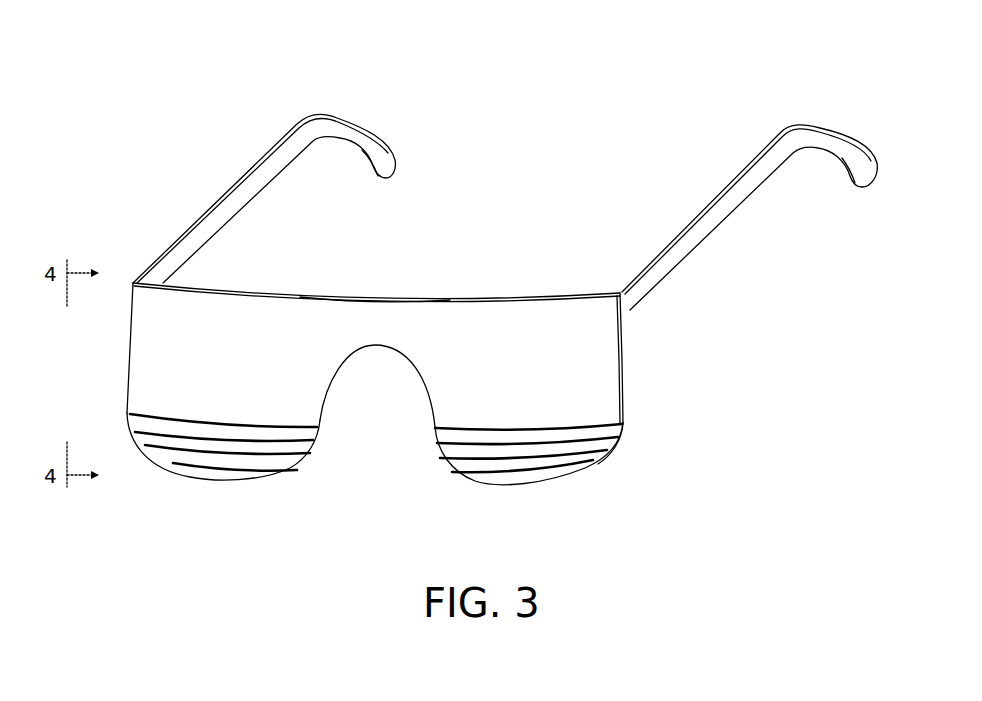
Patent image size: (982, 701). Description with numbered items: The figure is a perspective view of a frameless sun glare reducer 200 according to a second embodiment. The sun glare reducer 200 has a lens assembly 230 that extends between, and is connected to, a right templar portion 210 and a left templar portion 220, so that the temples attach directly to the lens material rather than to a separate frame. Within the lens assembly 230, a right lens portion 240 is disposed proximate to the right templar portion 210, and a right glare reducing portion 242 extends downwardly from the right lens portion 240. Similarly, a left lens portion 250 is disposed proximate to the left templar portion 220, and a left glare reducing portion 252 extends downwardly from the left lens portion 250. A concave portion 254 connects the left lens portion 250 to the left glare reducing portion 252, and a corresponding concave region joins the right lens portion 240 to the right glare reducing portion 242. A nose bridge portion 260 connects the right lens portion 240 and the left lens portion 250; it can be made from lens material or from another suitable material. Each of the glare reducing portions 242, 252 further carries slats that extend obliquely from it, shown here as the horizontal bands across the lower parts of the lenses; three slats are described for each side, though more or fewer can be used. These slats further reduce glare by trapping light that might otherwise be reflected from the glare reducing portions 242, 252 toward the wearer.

The sun glare reducer 200 is at (589, 70).
The right templar portion 210 is at (257, 163).
The left templar portion 220 is at (737, 173).
The lens assembly 230 is at (460, 302).
The right lens portion 240 is at (228, 306).
The left lens portion 250 is at (373, 320).
The right glare reducing portion 242 is at (143, 447).
The left glare reducing portion 252 is at (603, 455).
The concave portion 254 is at (630, 425).
The nose bridge portion 260 is at (433, 445).